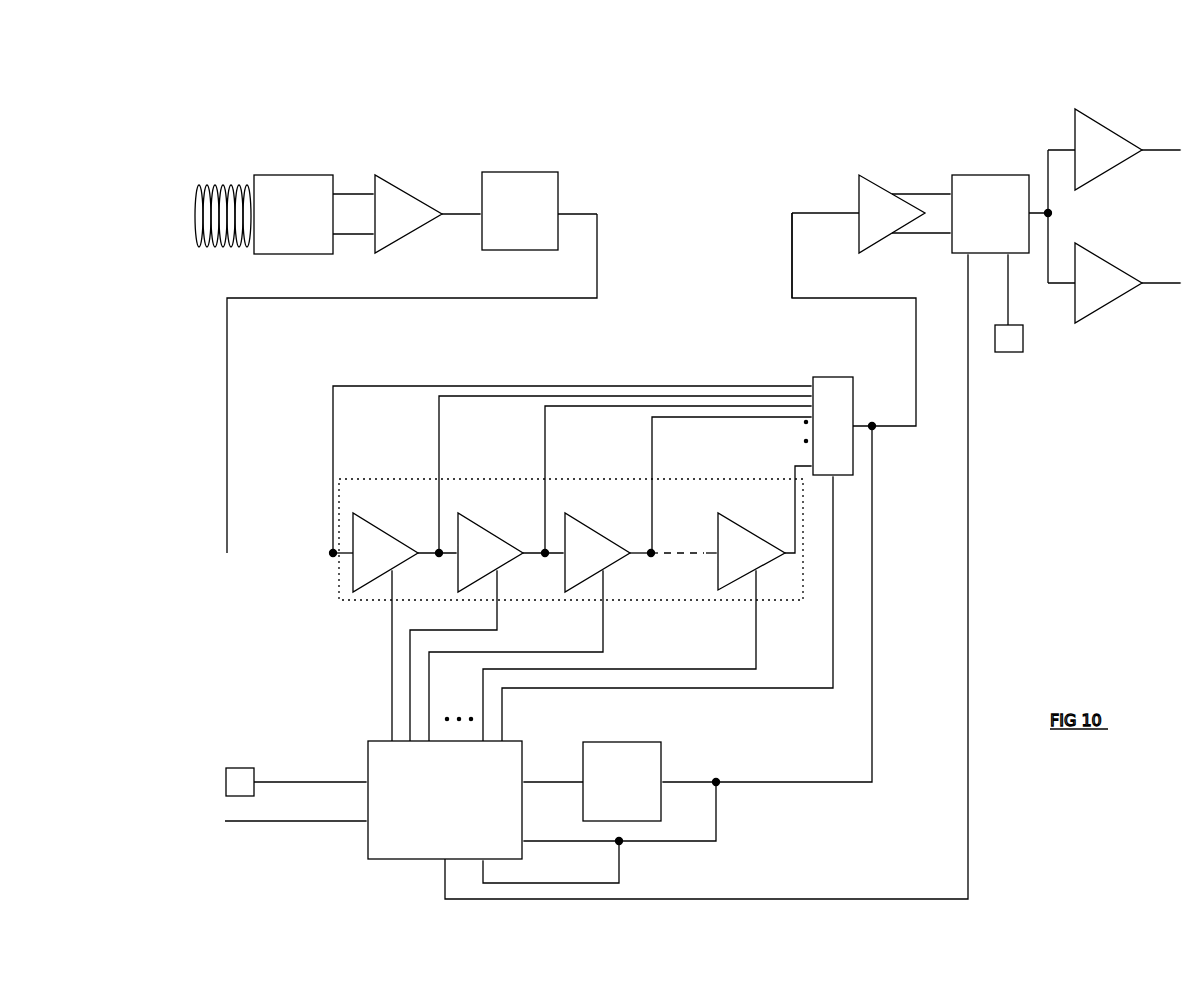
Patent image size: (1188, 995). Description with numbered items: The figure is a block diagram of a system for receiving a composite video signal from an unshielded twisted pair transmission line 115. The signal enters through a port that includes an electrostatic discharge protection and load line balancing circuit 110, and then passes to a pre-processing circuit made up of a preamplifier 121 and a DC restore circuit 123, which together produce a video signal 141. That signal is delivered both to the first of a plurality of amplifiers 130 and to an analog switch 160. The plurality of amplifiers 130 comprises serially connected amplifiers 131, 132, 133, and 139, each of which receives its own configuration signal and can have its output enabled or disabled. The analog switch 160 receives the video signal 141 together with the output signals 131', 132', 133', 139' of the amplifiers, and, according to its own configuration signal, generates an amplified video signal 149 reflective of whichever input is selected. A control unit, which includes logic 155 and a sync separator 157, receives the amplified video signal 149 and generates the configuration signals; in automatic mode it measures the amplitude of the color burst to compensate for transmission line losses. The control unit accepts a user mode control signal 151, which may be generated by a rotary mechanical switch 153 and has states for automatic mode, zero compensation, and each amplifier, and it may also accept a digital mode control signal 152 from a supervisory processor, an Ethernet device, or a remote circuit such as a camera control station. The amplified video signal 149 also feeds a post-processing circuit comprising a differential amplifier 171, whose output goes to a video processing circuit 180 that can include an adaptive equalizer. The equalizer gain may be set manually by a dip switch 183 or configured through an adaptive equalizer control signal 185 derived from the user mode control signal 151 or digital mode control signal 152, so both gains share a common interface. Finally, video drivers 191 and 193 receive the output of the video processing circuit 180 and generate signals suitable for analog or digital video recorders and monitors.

The unshielded twisted pair transmission line 115 is at (206, 183).
The electrostatic discharge protection and load line balancing circuit 110 is at (302, 175).
The preamplifier 121 is at (404, 190).
The DC restore circuit 123 is at (529, 172).
The video signal 141 is at (597, 245).
The amplified video signal 149 is at (792, 254).
The differential amplifier 171 is at (876, 182).
The video processing circuit 180 is at (988, 175).
The video driver 191 is at (1132, 112).
The video driver 193 is at (1112, 263).
The dip switch 183 is at (1010, 352).
The adaptive equalizer control signal 185 is at (968, 470).
The analog switch 160 is at (833, 377).
The plurality of amplifiers 130 is at (339, 596).
The amplifier 131 is at (385, 540).
The amplifier 132 is at (490, 540).
The amplifier 133 is at (597, 540).
The amplifier 139 is at (751, 538).
The output signal 131' is at (591, 474).
The output signal 132' is at (644, 479).
The output signal 133' is at (697, 485).
The output signal 139' is at (771, 498).
The logic 155 is at (385, 861).
The sync separator 157 is at (630, 740).
The user mode control signal 151 is at (294, 779).
The digital mode control signal 152 is at (296, 822).
The rotary mechanical switch 153 is at (226, 783).